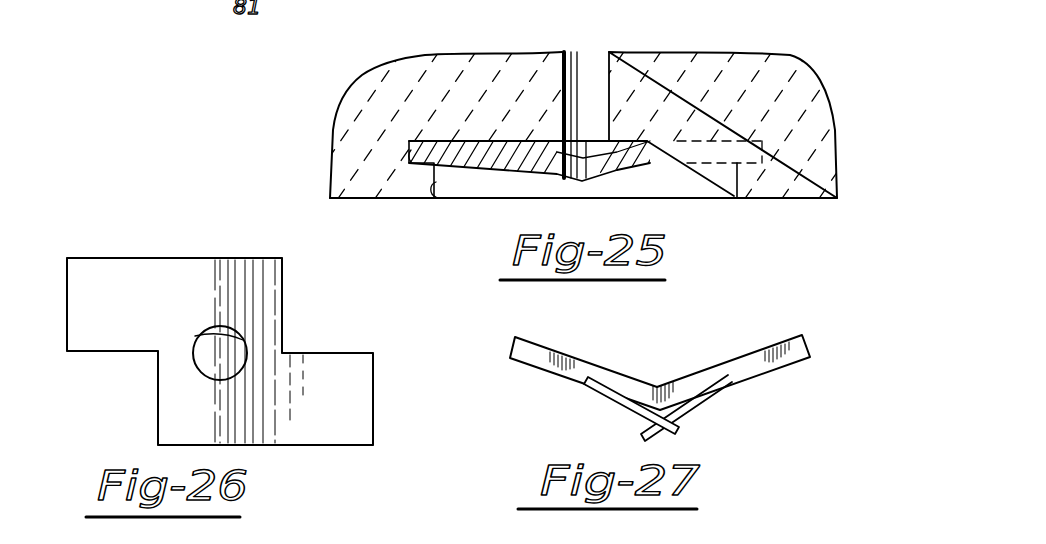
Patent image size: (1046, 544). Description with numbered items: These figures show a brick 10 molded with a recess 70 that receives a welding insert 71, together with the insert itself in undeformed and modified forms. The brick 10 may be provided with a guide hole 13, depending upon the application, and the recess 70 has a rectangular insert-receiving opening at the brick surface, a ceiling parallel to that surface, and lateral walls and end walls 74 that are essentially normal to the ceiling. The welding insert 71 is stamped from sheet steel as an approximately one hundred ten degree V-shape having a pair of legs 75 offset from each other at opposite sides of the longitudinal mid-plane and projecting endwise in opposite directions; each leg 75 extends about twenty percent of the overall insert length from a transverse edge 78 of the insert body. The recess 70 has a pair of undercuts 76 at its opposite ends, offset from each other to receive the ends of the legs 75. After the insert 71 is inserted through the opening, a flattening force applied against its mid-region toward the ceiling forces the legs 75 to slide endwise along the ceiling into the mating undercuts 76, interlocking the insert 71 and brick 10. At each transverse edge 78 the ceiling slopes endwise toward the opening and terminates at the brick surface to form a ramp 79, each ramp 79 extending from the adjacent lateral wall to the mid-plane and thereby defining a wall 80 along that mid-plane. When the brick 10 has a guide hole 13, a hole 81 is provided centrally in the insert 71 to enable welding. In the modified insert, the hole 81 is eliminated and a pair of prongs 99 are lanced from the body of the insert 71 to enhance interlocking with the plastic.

In FIG. 25, the brick 10 is at (705, 51).
In FIG. 25, the guide hole 13 is at (607, 60).
In FIG. 25, the recess 70 is at (677, 208).
In FIG. 25, the welding insert 71 is at (534, 155).
In FIG. 26, the welding insert 71 is at (217, 311).
In FIG. 27, the welding insert 71 is at (660, 356).
In FIG. 25, the end walls 74 is at (445, 198).
In FIG. 26, the legs 75 is at (80, 309).
In FIG. 27, the legs 75 is at (757, 354).
In FIG. 25, the undercuts 76 is at (420, 163).
In FIG. 26, the transverse edge 78 is at (282, 312).
In FIG. 25, the ramp 79 is at (703, 178).
In FIG. 25, the wall 80 is at (454, 173).
In FIG. 26, the hole 81 is at (205, 335).
In FIG. 27, the prongs 99 is at (637, 418).